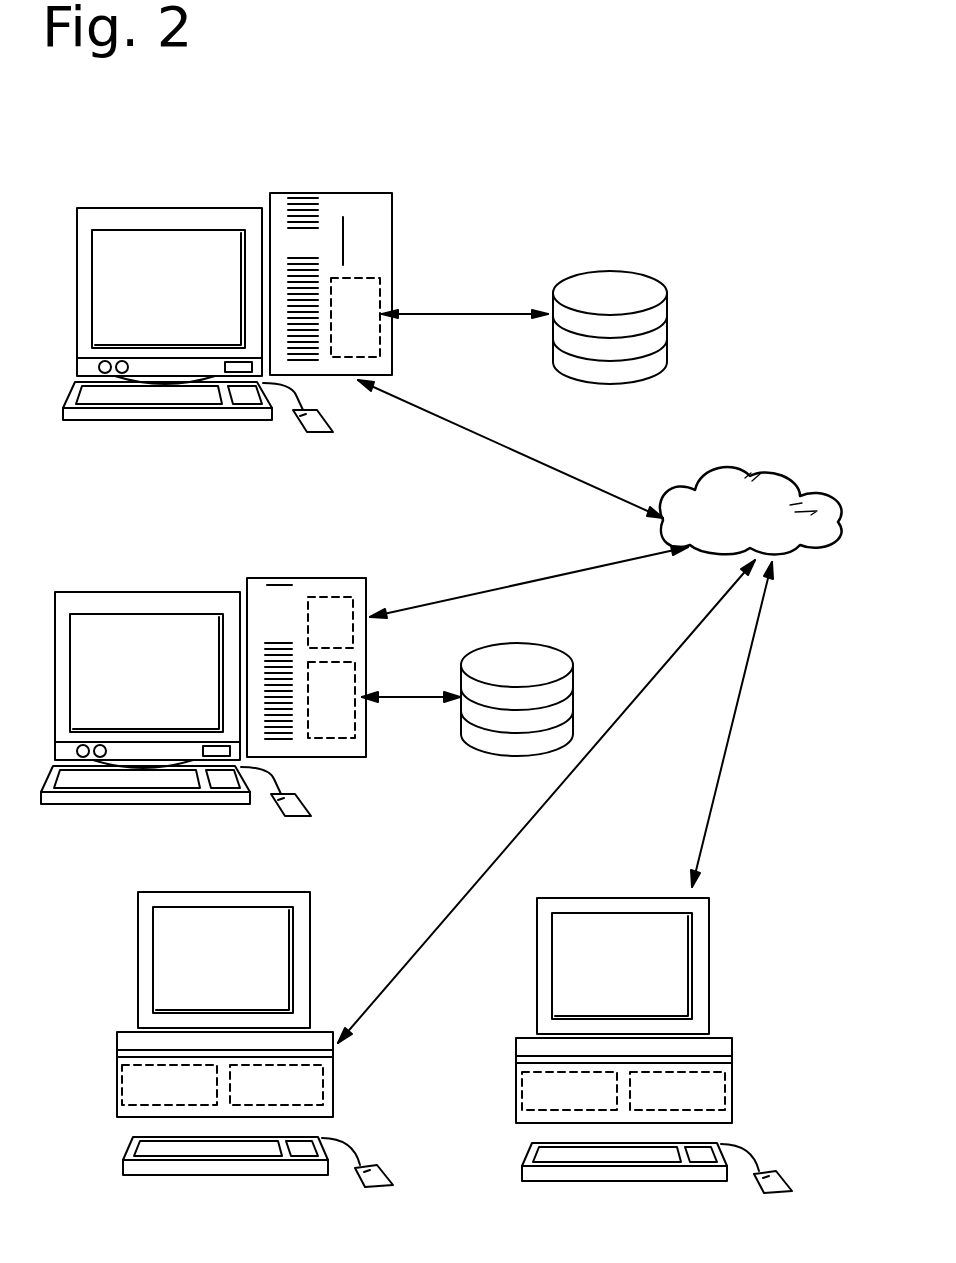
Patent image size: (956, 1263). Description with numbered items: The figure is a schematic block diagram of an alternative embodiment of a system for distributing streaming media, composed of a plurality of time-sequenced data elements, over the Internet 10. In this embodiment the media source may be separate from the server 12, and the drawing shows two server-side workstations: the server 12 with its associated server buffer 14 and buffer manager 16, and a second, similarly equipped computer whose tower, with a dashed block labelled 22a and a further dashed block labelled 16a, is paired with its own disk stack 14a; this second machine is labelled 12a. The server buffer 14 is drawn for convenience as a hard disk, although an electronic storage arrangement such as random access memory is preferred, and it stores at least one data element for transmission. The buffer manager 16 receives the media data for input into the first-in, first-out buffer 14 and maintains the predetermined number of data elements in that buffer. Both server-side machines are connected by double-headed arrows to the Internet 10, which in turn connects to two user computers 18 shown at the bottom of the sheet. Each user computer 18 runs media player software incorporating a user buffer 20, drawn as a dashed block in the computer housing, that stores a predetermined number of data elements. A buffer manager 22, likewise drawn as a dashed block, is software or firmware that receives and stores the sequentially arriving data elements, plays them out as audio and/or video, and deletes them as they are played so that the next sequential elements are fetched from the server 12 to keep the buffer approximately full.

The Internet 10 is at (760, 529).
The server 12 is at (282, 193).
The second server computer 12a is at (255, 578).
The server buffer 14 is at (668, 340).
The second database 14a is at (573, 710).
The buffer manager 16 is at (367, 333).
The second server software module 16a is at (343, 717).
The user computer 18 is at (333, 1087).
The user buffer 20 is at (307, 1095).
The buffer manager 22 is at (147, 1090).
The server browser module 22a is at (330, 598).